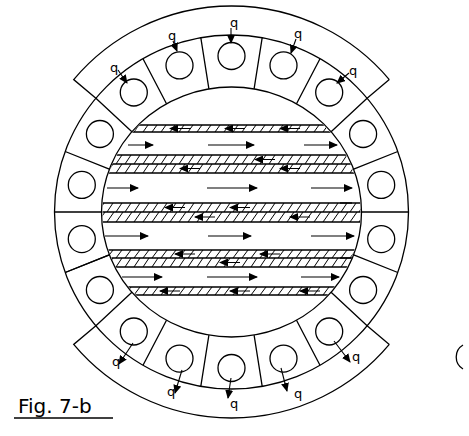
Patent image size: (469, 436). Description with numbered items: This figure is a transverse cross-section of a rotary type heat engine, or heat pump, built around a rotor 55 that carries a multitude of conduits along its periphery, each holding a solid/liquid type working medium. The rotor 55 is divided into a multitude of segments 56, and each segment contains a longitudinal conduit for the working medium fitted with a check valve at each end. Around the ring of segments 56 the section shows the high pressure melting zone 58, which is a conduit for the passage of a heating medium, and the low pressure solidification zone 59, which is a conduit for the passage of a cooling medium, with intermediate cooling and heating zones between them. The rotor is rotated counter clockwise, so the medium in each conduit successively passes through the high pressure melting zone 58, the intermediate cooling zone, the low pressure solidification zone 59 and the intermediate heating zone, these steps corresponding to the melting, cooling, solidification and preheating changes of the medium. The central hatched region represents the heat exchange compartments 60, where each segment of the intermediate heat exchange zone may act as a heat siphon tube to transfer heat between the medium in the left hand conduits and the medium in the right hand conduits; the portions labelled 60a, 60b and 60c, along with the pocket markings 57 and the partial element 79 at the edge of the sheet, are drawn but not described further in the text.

The rotor 55 is at (85, 115).
The segments 56 is at (342, 321).
The high pressure pockets PH 57 is at (388, 176).
The high pressure melting zone 58 is at (324, 42).
The low pressure solidification zone 59 is at (341, 380).
The heat exchange compartments 60 is at (355, 214).
The rotor passage portion 60a is at (101, 207).
The rotor passage portion 60b is at (348, 205).
The rotor passage portion 60c is at (334, 270).
The adjacent figure element 79 is at (468, 375).